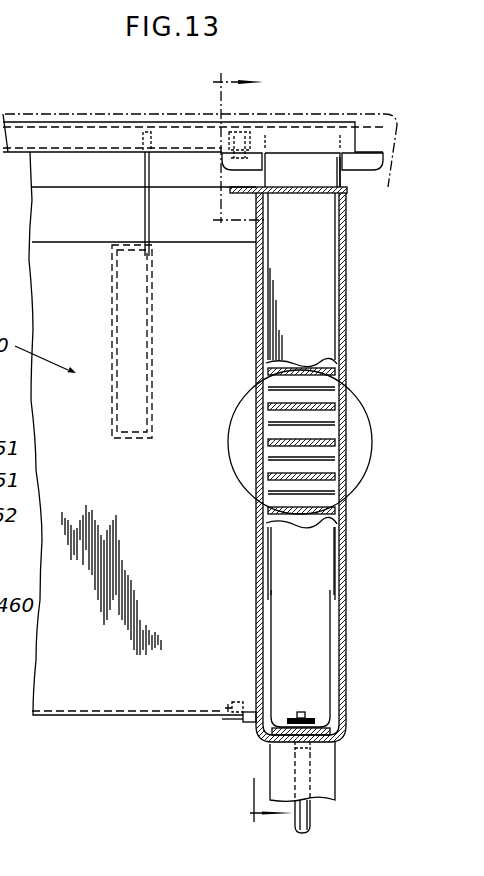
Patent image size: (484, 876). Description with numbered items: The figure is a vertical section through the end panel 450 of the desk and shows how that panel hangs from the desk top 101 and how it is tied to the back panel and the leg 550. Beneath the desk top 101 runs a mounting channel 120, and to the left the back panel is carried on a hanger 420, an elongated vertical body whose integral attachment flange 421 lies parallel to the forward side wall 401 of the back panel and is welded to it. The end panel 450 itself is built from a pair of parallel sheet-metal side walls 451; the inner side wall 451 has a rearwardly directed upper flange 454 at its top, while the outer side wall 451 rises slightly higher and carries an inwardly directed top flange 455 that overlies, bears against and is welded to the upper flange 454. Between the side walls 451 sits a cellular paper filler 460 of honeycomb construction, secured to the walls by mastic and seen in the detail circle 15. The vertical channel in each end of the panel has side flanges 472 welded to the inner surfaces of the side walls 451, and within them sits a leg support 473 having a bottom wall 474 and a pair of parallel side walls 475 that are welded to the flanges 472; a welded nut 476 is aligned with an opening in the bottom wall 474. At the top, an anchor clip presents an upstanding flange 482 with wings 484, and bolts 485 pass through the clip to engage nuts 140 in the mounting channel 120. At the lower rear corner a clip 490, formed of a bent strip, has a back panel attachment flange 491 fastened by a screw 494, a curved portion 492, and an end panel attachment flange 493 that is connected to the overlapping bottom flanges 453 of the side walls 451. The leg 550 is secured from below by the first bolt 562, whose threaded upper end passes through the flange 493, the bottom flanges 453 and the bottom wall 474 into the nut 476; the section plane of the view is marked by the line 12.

The desk top 101 is at (95, 130).
The section line 12- 12 is at (238, 450).
The detail circle 15 is at (232, 473).
The mounting channel 120 is at (313, 150).
The nut 140 is at (256, 145).
The forward side wall 401 is at (110, 490).
The hanger 420 is at (141, 162).
The attachment flange 421 is at (112, 320).
The end panel 450 is at (255, 300).
The side wall 451 is at (256, 337).
The bottom flange 453 is at (337, 735).
The upper flange 454 is at (243, 192).
The top flange 455 is at (318, 193).
The filler 460 is at (305, 433).
The side flange 472 is at (266, 553).
The leg support 473 is at (327, 642).
The bottom wall 474 is at (272, 740).
The side wall 475 is at (270, 606).
The nut 476 is at (316, 720).
The upstanding flange 482 is at (297, 173).
The wing 484 is at (224, 167).
The bolt 485 is at (236, 138).
The clip 490 is at (270, 750).
The back panel attachment flange 491 is at (223, 704).
The curved portion 492 is at (253, 728).
The end panel attachment flange 493 is at (293, 754).
The screw 494 is at (222, 722).
The leg 550 is at (318, 800).
The first bolt 562 is at (300, 712).